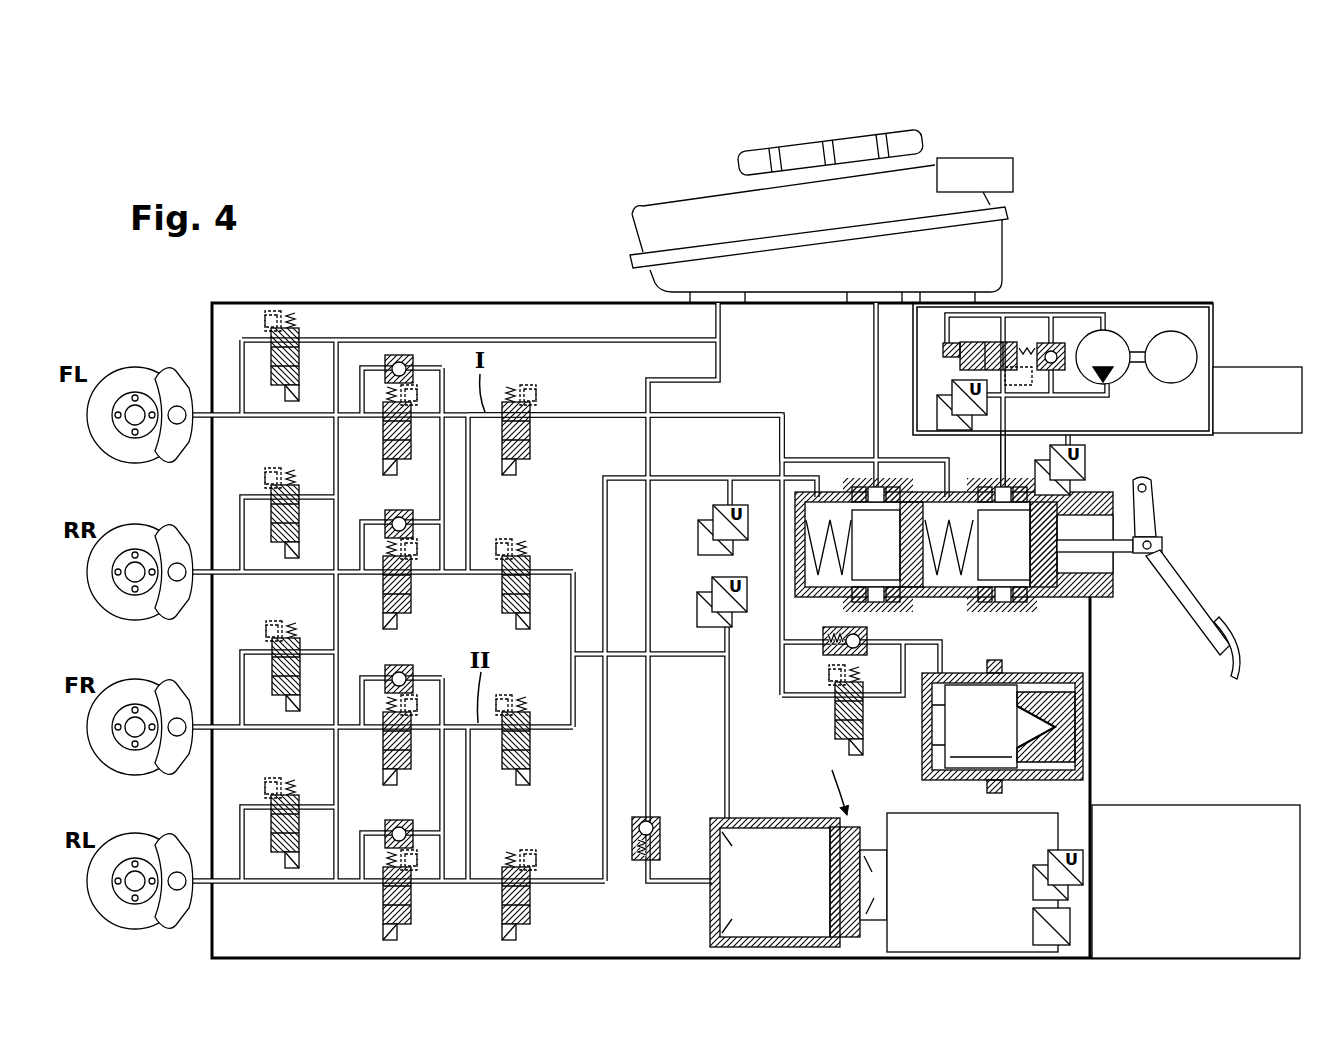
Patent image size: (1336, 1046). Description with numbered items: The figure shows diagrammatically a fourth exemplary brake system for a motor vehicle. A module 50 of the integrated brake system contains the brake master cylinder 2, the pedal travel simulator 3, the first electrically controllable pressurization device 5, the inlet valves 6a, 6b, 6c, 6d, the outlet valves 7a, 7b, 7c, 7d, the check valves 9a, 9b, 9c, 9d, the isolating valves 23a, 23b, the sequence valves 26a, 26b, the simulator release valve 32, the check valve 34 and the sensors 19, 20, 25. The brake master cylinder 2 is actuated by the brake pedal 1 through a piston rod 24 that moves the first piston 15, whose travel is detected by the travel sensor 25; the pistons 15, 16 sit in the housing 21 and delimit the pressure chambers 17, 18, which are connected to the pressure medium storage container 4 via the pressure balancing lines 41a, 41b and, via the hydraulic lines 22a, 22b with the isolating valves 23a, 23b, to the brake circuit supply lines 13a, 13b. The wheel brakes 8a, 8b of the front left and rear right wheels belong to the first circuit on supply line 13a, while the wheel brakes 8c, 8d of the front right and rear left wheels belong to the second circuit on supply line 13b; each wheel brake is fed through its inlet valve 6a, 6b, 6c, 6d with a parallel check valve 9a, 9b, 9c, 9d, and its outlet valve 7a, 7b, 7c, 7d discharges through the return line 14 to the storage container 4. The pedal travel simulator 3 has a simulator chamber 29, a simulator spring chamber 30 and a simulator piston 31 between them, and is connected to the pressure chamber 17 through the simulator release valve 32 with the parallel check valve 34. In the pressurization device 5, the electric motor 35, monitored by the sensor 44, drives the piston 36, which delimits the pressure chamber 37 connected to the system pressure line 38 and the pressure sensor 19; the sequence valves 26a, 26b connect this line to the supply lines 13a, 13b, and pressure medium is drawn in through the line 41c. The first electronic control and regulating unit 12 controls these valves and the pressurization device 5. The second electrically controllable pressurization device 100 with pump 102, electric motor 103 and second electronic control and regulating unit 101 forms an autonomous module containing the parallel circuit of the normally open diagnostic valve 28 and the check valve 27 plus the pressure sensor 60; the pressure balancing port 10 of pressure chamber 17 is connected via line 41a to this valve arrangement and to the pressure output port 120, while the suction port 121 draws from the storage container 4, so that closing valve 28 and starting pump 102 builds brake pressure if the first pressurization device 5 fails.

The brake pedal 1 is at (1192, 598).
The brake master cylinder 2 is at (954, 535).
The pedal travel simulator 3 is at (1019, 732).
The pressure medium storage container 4 is at (660, 215).
The first electrically controllable pressurization device 5 is at (834, 780).
The inlet valve 6a is at (383, 435).
The inlet valve 6b is at (383, 590).
The inlet valve 6c is at (383, 745).
The inlet valve 6d is at (383, 902).
The outlet valve 7a is at (300, 338).
The outlet valve 7b is at (300, 492).
The outlet valve 7c is at (301, 644).
The outlet valve 7d is at (301, 800).
The wheel brake 8a is at (175, 382).
The wheel brake 8b is at (175, 539).
The wheel brake 8c is at (175, 694).
The wheel brake 8d is at (175, 848).
The check valve 9a is at (400, 353).
The check valve 9b is at (405, 510).
The check valve 9c is at (405, 666).
The check valve 9d is at (405, 821).
The pressure balancing port 10 is at (1001, 466).
The first electronic control and regulating unit 12 is at (1234, 805).
The brake circuit supply line 13a is at (471, 508).
The brake circuit supply line 13b is at (471, 828).
The return line 14 is at (545, 337).
The piston 15 is at (1043, 572).
The piston 16 is at (915, 577).
The pressure chamber 17 is at (955, 575).
The pressure chamber 18 is at (835, 520).
The pressure sensor 19 is at (737, 618).
The sensor 20 is at (742, 503).
The housing 21 is at (1092, 640).
The hydraulic line 22a is at (628, 413).
The hydraulic line 22b is at (610, 850).
The isolating valve 23a is at (531, 438).
The isolating valve 23b is at (531, 903).
The piston rod 24 is at (1122, 548).
The travel sensor 25 is at (1090, 455).
The sequence valve 26a is at (531, 592).
The sequence valve 26b is at (531, 765).
The check valve 27 is at (1063, 342).
The diagnostic valve 28 is at (1003, 341).
The simulator chamber 29 is at (930, 748).
The simulator spring chamber 30 is at (1035, 768).
The simulator piston 31 is at (970, 727).
The simulator release valve 32 is at (835, 713).
The check valve 34 is at (824, 654).
The electric motor 35 is at (1040, 832).
The piston 36 is at (825, 827).
The pressure chamber 37 is at (765, 862).
The system pressure line 38 is at (685, 652).
The pressure balancing line 41a is at (1005, 458).
The pressure balancing line 41b is at (874, 325).
The line 41c is at (722, 362).
The sensor 44 is at (1085, 870).
The module 50 is at (476, 300).
The pressure sensor 60 is at (950, 390).
The second electrically controllable pressurization device 100 is at (1183, 301).
The second electronic control and regulating unit 101 is at (1270, 367).
The pump 102 is at (1122, 340).
The electric motor 103 is at (1198, 357).
The pressure output port 120 is at (1108, 380).
The suction port 121 is at (1105, 330).